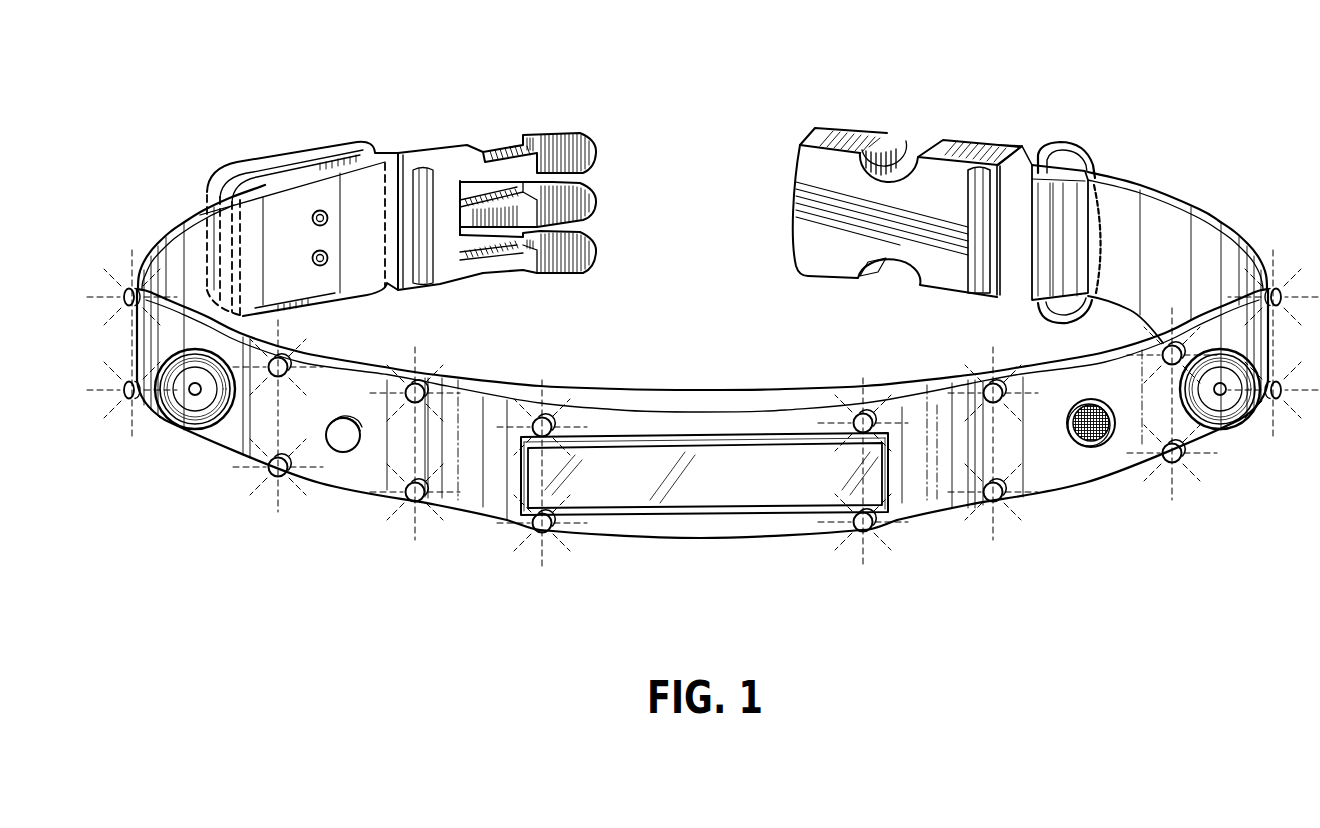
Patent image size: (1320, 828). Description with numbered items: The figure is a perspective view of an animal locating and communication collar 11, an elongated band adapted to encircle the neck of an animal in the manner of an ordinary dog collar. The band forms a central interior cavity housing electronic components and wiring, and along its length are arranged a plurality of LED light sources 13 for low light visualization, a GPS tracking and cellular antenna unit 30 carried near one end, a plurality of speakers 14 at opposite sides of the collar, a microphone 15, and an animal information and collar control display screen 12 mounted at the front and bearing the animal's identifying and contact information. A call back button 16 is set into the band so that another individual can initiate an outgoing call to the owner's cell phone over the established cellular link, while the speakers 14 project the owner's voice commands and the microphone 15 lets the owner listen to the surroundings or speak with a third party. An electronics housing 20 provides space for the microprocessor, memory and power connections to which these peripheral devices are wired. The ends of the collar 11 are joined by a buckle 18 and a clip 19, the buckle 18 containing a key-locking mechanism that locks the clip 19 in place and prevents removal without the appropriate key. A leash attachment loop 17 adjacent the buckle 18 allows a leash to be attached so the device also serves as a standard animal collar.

The collar 11 is at (375, 578).
The animal information and collar control display screen 12 is at (692, 505).
The LED light sources 13 is at (998, 500).
The speakers 14 is at (193, 407).
The microphone 15 is at (1093, 450).
The call back button 16 is at (340, 440).
The leash attachment loop 17 is at (1052, 146).
The buckle 18 is at (845, 130).
The clip 19 is at (553, 148).
The electronics housing 20 is at (937, 497).
The GPS tracking and cellular antenna unit 30 is at (280, 172).